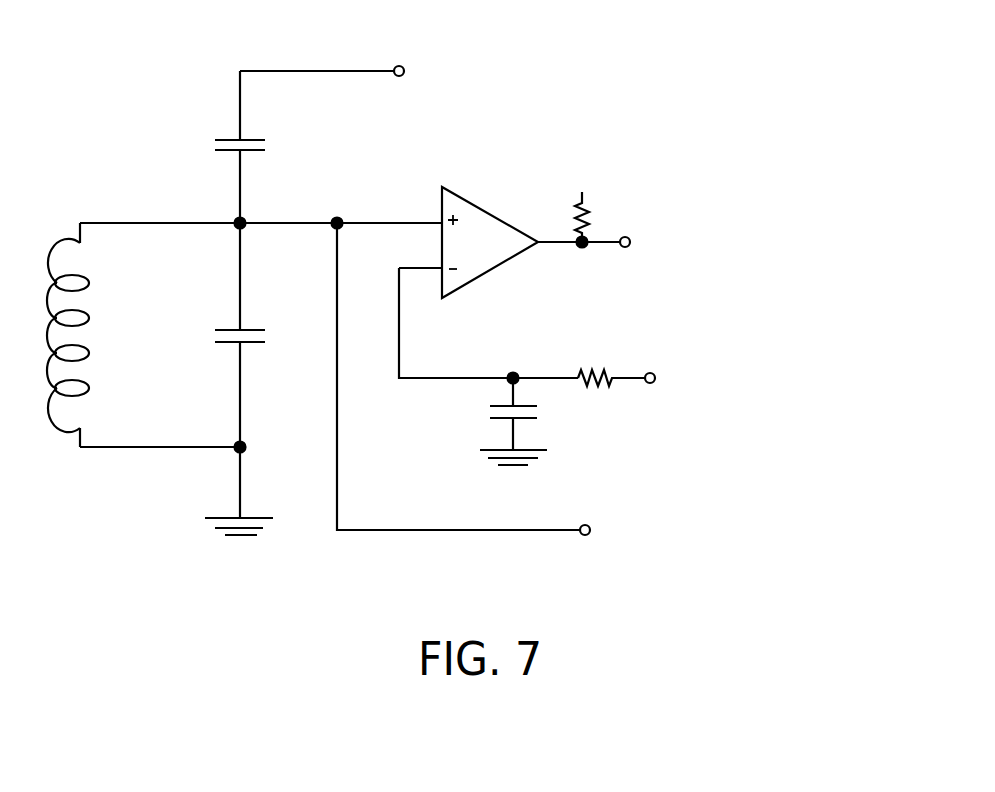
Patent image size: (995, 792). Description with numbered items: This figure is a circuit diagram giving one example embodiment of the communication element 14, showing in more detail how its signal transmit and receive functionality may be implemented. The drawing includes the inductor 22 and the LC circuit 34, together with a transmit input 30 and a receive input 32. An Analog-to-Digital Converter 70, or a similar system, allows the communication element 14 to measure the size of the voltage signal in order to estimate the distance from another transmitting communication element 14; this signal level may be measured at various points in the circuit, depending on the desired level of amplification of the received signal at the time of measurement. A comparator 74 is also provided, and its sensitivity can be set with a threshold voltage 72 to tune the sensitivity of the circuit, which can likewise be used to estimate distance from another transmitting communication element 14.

The communication element 14 is at (477, 314).
The inductor 22 is at (89, 318).
The LC circuit 34 is at (250, 345).
The transmit input 30 is at (425, 88).
The receive input 32 is at (648, 267).
The Analog-to-Digital Converter 70 is at (618, 550).
The threshold voltage 72 is at (755, 397).
The comparator 74 is at (495, 268).